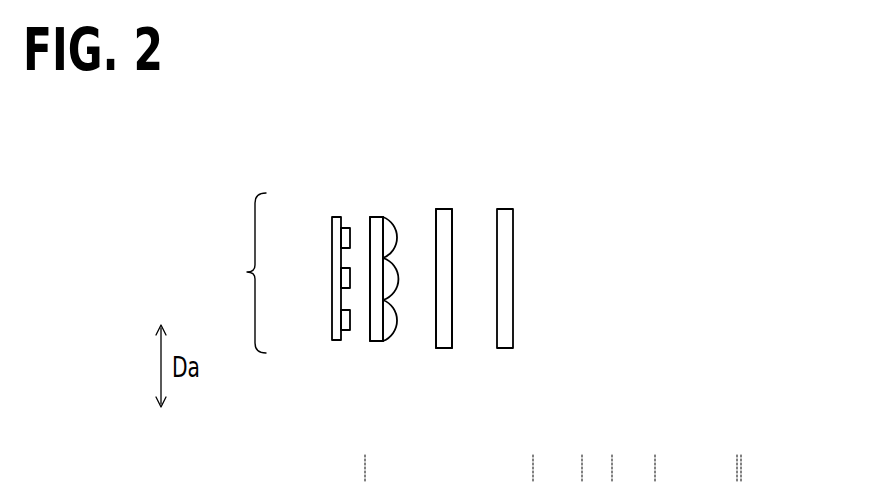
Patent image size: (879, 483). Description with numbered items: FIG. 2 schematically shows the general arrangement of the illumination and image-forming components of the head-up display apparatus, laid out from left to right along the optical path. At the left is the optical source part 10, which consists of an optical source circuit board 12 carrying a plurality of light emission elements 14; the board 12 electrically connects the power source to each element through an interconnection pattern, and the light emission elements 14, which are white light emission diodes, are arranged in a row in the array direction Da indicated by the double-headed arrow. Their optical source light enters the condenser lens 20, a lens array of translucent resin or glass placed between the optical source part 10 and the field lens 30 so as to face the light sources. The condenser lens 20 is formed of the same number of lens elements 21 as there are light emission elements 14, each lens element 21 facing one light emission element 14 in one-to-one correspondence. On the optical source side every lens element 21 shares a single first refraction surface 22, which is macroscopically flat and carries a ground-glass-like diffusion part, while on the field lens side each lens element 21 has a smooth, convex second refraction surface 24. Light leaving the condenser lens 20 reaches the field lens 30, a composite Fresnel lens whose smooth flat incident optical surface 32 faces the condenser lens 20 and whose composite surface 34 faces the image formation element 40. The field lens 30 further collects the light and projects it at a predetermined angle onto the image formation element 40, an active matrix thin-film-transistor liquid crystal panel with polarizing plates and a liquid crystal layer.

The optical source part 10 is at (247, 272).
The optical source circuit board 12 is at (332, 228).
The light emission element 14 is at (342, 238).
The condenser lens 20 is at (364, 348).
The lens element 21 is at (387, 242).
The first refraction surface 22 is at (369, 227).
The second refraction surface 24 is at (393, 220).
The field lens 30 is at (455, 350).
The incident optical surface 32 is at (436, 229).
The composite surface 34 is at (452, 232).
The image formation element 40 is at (516, 350).